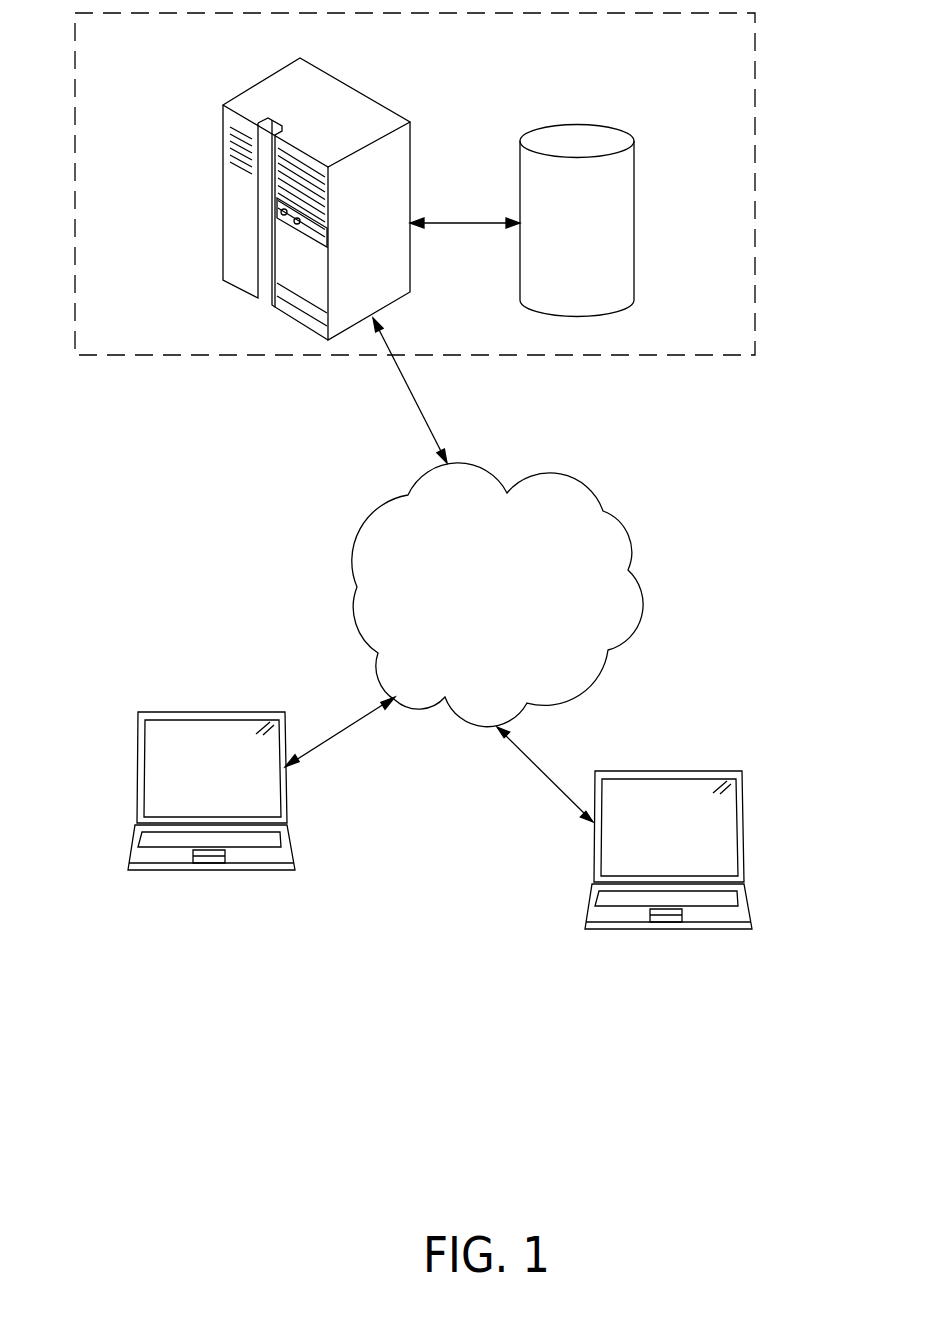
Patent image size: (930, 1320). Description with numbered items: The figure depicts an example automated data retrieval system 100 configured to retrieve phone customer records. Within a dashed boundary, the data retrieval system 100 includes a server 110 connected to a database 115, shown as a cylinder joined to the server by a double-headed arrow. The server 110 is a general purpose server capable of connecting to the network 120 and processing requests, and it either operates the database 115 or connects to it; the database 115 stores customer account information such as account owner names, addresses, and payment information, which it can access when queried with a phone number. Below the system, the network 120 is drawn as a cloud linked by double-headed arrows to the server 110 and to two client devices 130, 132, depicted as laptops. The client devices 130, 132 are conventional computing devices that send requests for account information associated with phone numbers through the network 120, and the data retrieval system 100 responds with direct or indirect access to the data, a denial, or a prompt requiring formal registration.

The data retrieval system 100 is at (435, 79).
The server 110 is at (223, 203).
The database 115 is at (634, 223).
The network 120 is at (515, 621).
The client device 130 is at (137, 763).
The client device 132 is at (745, 830).